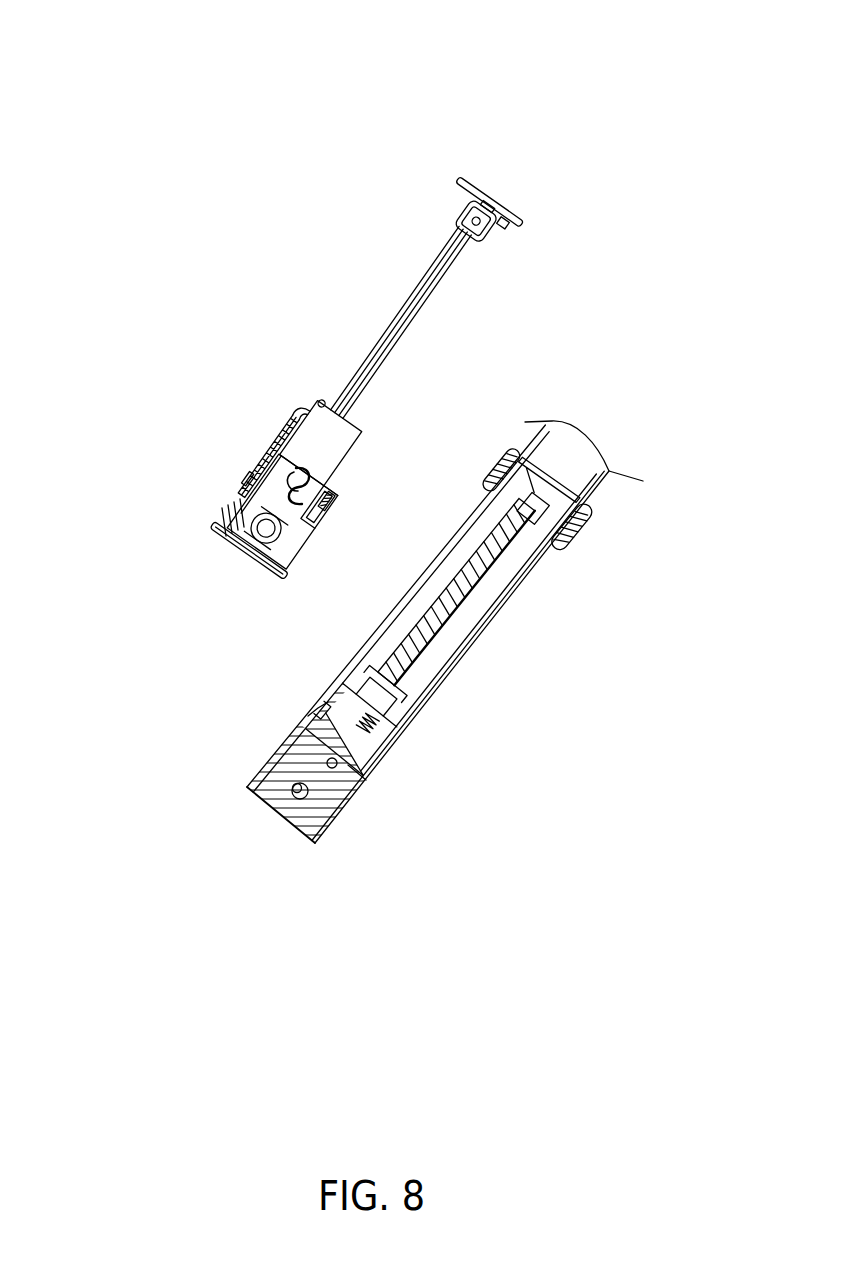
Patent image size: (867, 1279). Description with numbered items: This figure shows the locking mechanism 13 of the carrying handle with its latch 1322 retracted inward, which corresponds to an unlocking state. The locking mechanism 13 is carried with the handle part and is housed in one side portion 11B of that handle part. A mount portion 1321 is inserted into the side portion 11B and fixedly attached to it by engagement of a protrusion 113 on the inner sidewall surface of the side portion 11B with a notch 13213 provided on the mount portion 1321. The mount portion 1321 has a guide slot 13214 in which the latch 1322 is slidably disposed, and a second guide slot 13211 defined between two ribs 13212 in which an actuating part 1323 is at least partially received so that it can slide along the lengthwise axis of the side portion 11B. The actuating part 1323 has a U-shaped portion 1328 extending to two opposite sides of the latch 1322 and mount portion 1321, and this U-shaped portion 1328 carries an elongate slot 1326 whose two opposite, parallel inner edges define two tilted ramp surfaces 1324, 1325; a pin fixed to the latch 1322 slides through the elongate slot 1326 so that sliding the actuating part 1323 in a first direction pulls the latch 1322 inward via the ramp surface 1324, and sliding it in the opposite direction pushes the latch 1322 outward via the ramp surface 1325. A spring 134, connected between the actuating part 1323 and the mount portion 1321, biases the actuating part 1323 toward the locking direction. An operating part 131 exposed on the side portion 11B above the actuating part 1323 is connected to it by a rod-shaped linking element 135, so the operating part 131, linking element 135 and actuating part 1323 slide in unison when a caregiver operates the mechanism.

The locking mechanism 13 is at (417, 147).
The side portion 11B is at (523, 583).
The operating part 131 is at (582, 530).
The linking element 135 is at (440, 616).
The U-shaped portion 1328 is at (325, 406).
The actuating part 1323 is at (390, 711).
The notch 13213 is at (322, 702).
The latch 1322 is at (300, 740).
The ribs 13212 is at (257, 487).
The ramp surface 1324 is at (307, 475).
The ramp surface 1325 is at (268, 522).
The guide slot 13211 is at (233, 537).
The mount portion 1321 is at (312, 817).
The elongate slot 1326 is at (303, 527).
The protrusion 113 is at (315, 713).
The spring 134 is at (380, 730).
The guide slot 13214 is at (358, 785).